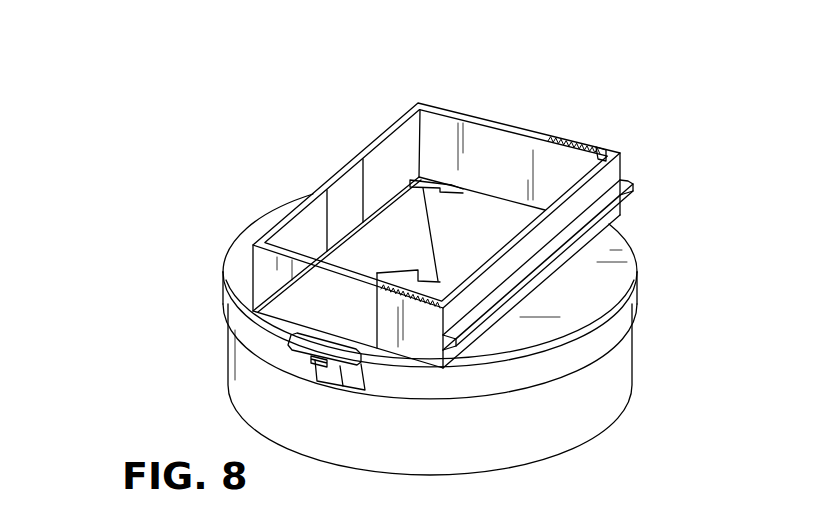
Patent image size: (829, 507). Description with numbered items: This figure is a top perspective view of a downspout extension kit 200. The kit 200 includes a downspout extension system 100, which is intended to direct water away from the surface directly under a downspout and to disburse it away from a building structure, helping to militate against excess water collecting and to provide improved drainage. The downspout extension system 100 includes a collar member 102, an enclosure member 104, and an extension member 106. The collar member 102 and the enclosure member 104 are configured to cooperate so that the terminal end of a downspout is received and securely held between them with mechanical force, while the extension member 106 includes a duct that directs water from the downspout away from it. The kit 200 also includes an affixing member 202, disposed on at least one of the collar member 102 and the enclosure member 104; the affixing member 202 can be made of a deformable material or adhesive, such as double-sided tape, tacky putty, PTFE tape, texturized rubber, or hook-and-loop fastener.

The downspout extension system 100 is at (204, 337).
The collar member 102 is at (302, 233).
The enclosure member 104 is at (615, 170).
The extension member 106 is at (612, 372).
The downspout extension kit 200 is at (464, 205).
The affixing member 202 is at (347, 185).